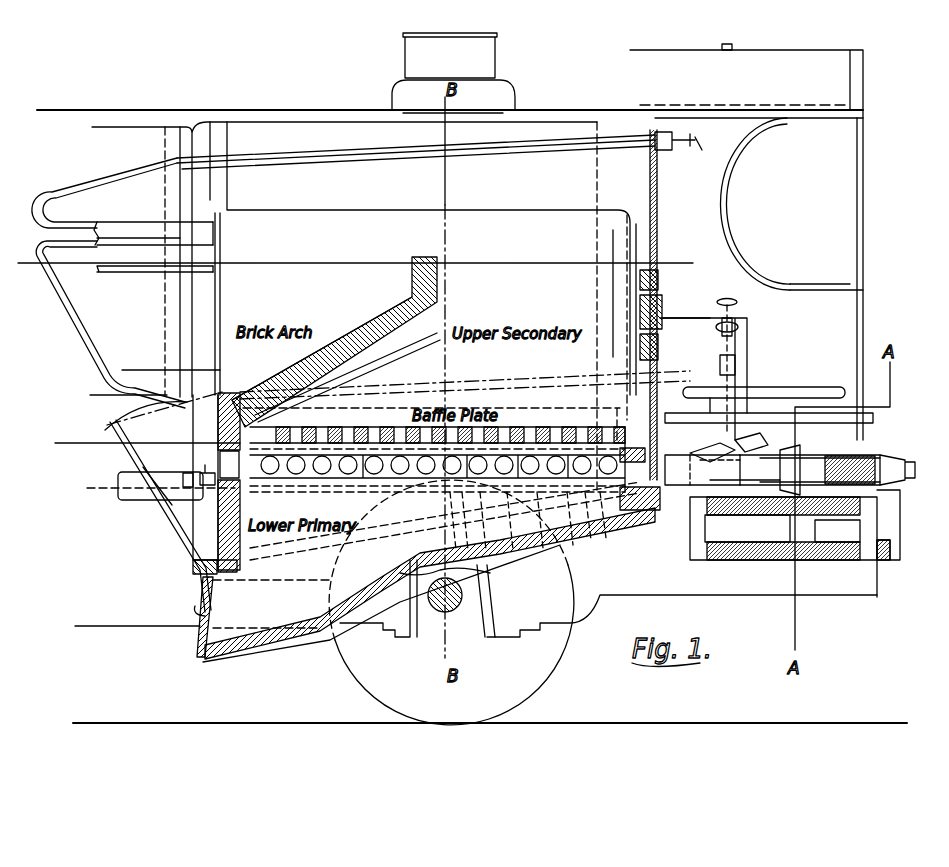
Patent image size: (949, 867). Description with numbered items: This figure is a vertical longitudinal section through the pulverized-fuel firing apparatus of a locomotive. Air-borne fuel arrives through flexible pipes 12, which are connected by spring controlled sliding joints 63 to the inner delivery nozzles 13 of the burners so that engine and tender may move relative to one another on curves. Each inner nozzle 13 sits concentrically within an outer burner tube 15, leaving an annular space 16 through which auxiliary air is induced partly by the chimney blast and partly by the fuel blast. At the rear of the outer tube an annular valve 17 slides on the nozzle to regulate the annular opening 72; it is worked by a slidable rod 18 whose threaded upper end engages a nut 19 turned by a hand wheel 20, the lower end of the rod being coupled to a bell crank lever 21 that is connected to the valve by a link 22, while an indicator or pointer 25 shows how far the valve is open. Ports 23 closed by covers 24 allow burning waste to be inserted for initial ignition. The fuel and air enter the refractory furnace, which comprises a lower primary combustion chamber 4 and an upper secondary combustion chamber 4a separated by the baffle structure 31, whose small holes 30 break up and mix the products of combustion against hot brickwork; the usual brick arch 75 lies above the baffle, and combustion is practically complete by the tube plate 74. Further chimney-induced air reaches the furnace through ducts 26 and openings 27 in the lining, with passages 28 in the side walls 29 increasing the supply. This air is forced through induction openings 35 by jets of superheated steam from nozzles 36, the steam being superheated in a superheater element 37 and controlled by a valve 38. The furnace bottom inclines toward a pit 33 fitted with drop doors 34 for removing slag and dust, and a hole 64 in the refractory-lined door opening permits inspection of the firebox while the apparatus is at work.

The furnace 4 is at (437, 474).
The upper secondary combustion chamber 4a is at (464, 354).
The flexible pipes 12 is at (905, 468).
The inner delivery nozzles 13 is at (745, 470).
The outer burner tubes 15 is at (715, 470).
The annular spaces 16 is at (757, 490).
The annular valves 17 is at (786, 455).
The slidable rod 18 is at (727, 361).
The nut 19 is at (732, 347).
The hand wheel 20 is at (738, 302).
The bell crank lever 21 is at (730, 437).
The link 22 is at (810, 470).
The ports 23 is at (702, 470).
The covers 24 is at (681, 447).
The indicator or pointer 25 is at (745, 368).
The ducts 26 is at (229, 464).
The openings 27 is at (336, 480).
The passages 28 is at (460, 508).
The side walls 29 is at (240, 540).
The small holes 30 is at (556, 428).
The baffle structure 31 is at (402, 427).
The pit 33 is at (263, 617).
The drop doors 34 is at (200, 628).
The induction openings 35 is at (213, 485).
The nozzles 36 is at (182, 487).
The superheater element 37 is at (113, 233).
The valve 38 is at (676, 150).
The spring controlled sliding joints 63 is at (848, 461).
The inspection hole 64 is at (640, 308).
The annular opening 72 is at (783, 443).
The tube plate 74 is at (228, 325).
The brick arch 75 is at (376, 318).